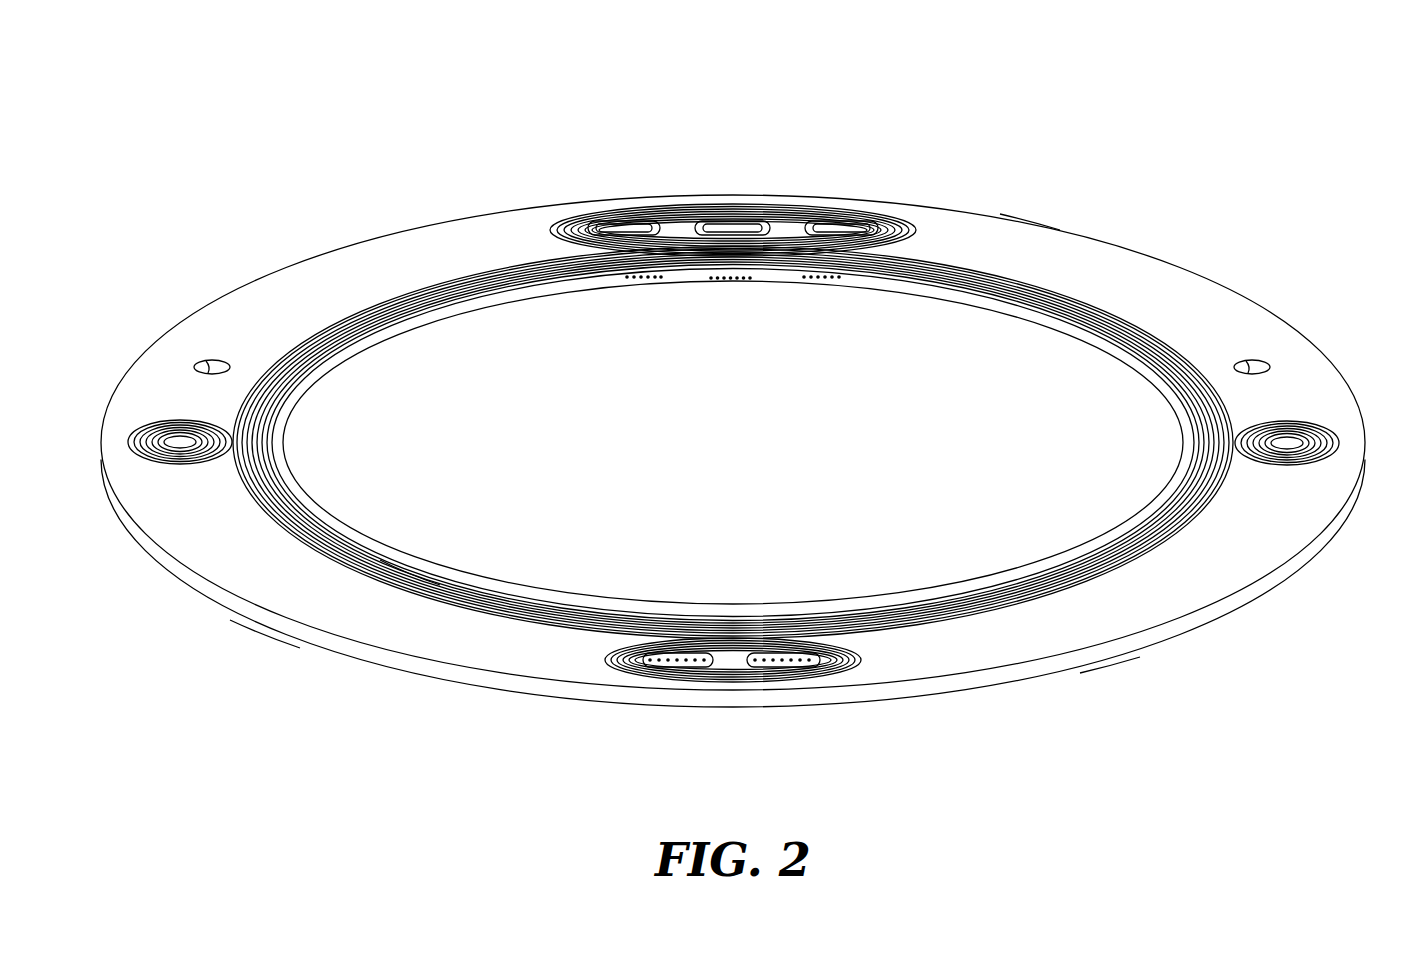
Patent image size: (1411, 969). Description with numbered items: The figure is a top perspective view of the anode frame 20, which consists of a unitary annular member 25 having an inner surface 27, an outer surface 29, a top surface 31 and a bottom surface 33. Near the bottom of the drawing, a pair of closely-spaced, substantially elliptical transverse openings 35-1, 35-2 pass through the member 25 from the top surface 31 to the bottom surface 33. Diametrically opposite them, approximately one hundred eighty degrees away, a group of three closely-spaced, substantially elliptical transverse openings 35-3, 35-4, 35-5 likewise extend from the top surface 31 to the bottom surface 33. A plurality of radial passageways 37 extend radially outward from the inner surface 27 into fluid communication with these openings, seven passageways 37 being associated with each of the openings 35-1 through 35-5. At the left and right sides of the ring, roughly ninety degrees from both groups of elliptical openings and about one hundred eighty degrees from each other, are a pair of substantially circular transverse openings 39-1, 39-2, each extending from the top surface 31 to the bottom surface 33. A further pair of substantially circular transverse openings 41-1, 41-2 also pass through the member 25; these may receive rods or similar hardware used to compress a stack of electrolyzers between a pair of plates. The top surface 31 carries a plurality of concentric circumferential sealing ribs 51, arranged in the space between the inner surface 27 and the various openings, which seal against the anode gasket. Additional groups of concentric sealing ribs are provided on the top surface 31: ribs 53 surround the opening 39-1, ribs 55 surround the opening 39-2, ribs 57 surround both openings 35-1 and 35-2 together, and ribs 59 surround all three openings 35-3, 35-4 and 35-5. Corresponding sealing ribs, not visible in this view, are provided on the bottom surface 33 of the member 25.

The anode frame 20 is at (424, 110).
The unitary annular member 25 is at (414, 552).
The inner surface 27 is at (893, 287).
The outer surface 29 is at (1112, 651).
The top surface 31 is at (1028, 247).
The bottom surface 33 is at (263, 627).
The transverse opening 35-1 is at (683, 655).
The transverse opening 35-2 is at (778, 655).
The transverse opening 35-3 is at (626, 222).
The transverse opening 35-4 is at (731, 222).
The transverse opening 35-5 is at (838, 222).
The radial passageway 37 is at (832, 280).
The transverse opening 39-1 is at (1289, 440).
The transverse opening 39-2 is at (181, 441).
The transverse opening 41-1 is at (1253, 362).
The transverse opening 41-2 is at (215, 360).
The circumferential sealing ribs 51 is at (1088, 310).
The ribs 53 is at (1328, 437).
The ribs 55 is at (130, 435).
The ribs 57 is at (842, 655).
The ribs 59 is at (893, 236).